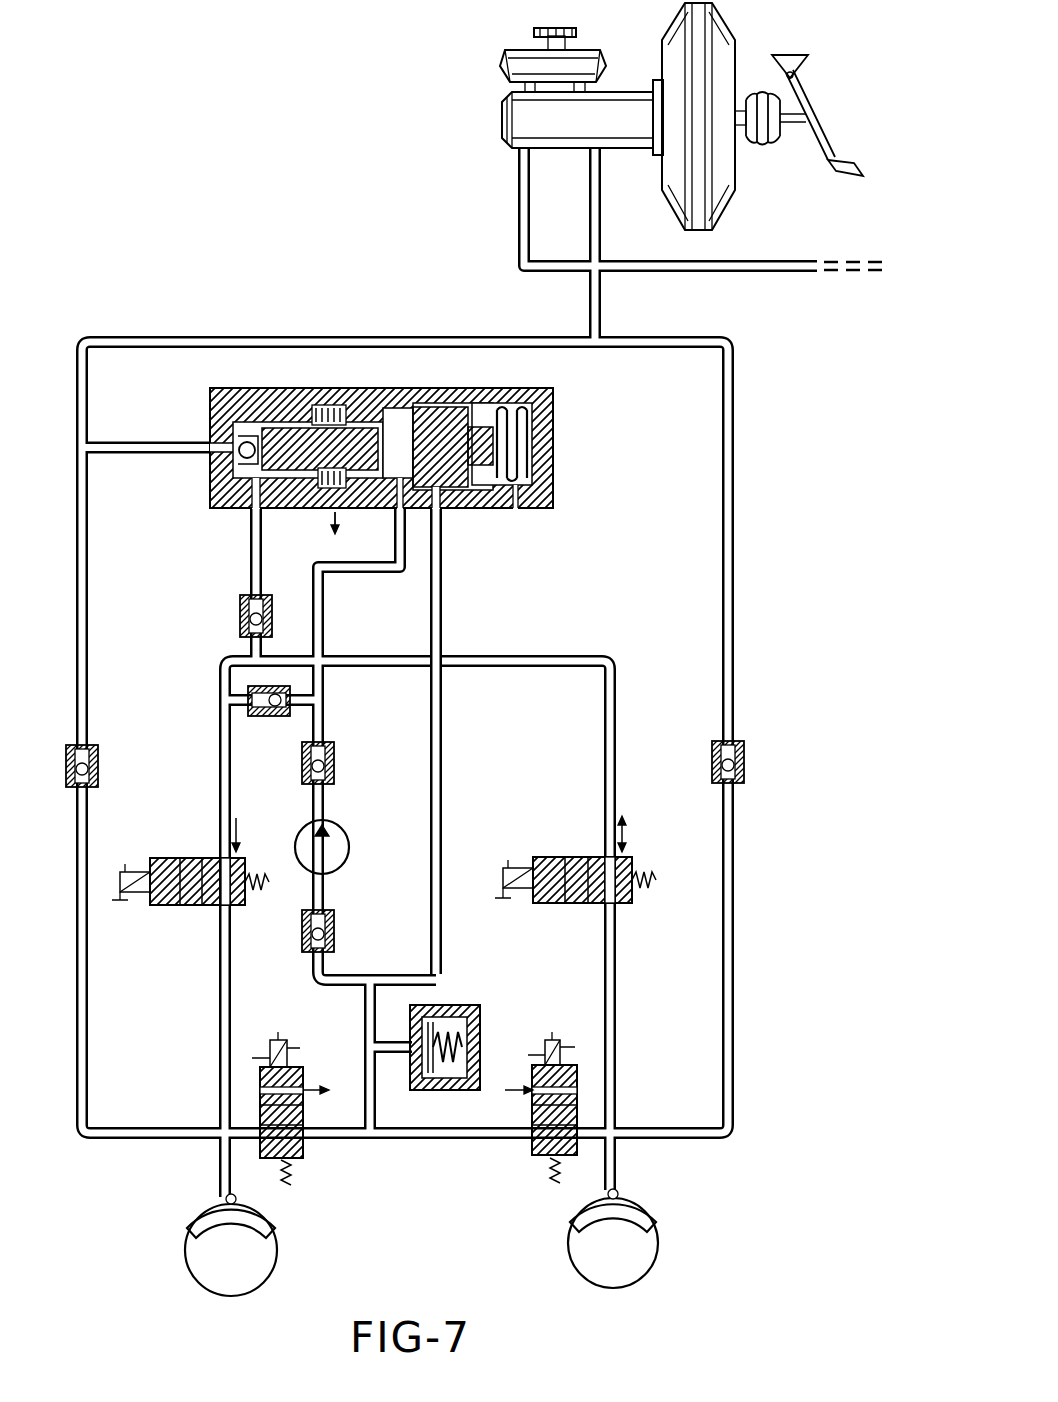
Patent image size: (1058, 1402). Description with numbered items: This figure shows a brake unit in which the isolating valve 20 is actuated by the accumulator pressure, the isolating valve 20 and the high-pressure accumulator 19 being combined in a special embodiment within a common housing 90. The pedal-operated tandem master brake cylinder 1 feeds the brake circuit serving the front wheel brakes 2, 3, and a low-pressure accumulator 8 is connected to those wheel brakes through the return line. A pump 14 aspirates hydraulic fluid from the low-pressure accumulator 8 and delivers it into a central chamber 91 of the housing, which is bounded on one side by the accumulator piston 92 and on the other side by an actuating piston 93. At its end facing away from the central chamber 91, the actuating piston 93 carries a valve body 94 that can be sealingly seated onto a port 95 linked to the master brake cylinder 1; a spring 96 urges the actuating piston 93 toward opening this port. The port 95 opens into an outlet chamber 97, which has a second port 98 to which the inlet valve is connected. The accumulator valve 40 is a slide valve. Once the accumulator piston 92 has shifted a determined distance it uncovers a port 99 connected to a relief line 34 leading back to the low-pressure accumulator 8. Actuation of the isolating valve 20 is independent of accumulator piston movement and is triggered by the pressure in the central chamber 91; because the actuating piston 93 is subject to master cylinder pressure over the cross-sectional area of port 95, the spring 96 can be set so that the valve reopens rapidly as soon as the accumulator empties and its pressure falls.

The tandem master brake cylinder 1 is at (525, 113).
The front wheel brake 2 is at (270, 1264).
The front wheel brake 3 is at (568, 1247).
The low-pressure accumulator 8 is at (478, 1018).
The pump 14 is at (340, 845).
The high-pressure accumulator 19 is at (350, 435).
The isolating valve 20 is at (172, 418).
The relief line 34 is at (442, 766).
The accumulator valve 40 is at (490, 508).
The common housing 90 is at (492, 410).
The central chamber 91 is at (397, 420).
The accumulator piston 92 is at (430, 420).
The actuating piston 93 is at (345, 424).
The valve body 94 is at (238, 440).
The port 95 is at (228, 470).
The spring 96 is at (322, 408).
The outlet chamber 97 is at (250, 483).
The second port 98 is at (278, 510).
The port 99 is at (440, 510).